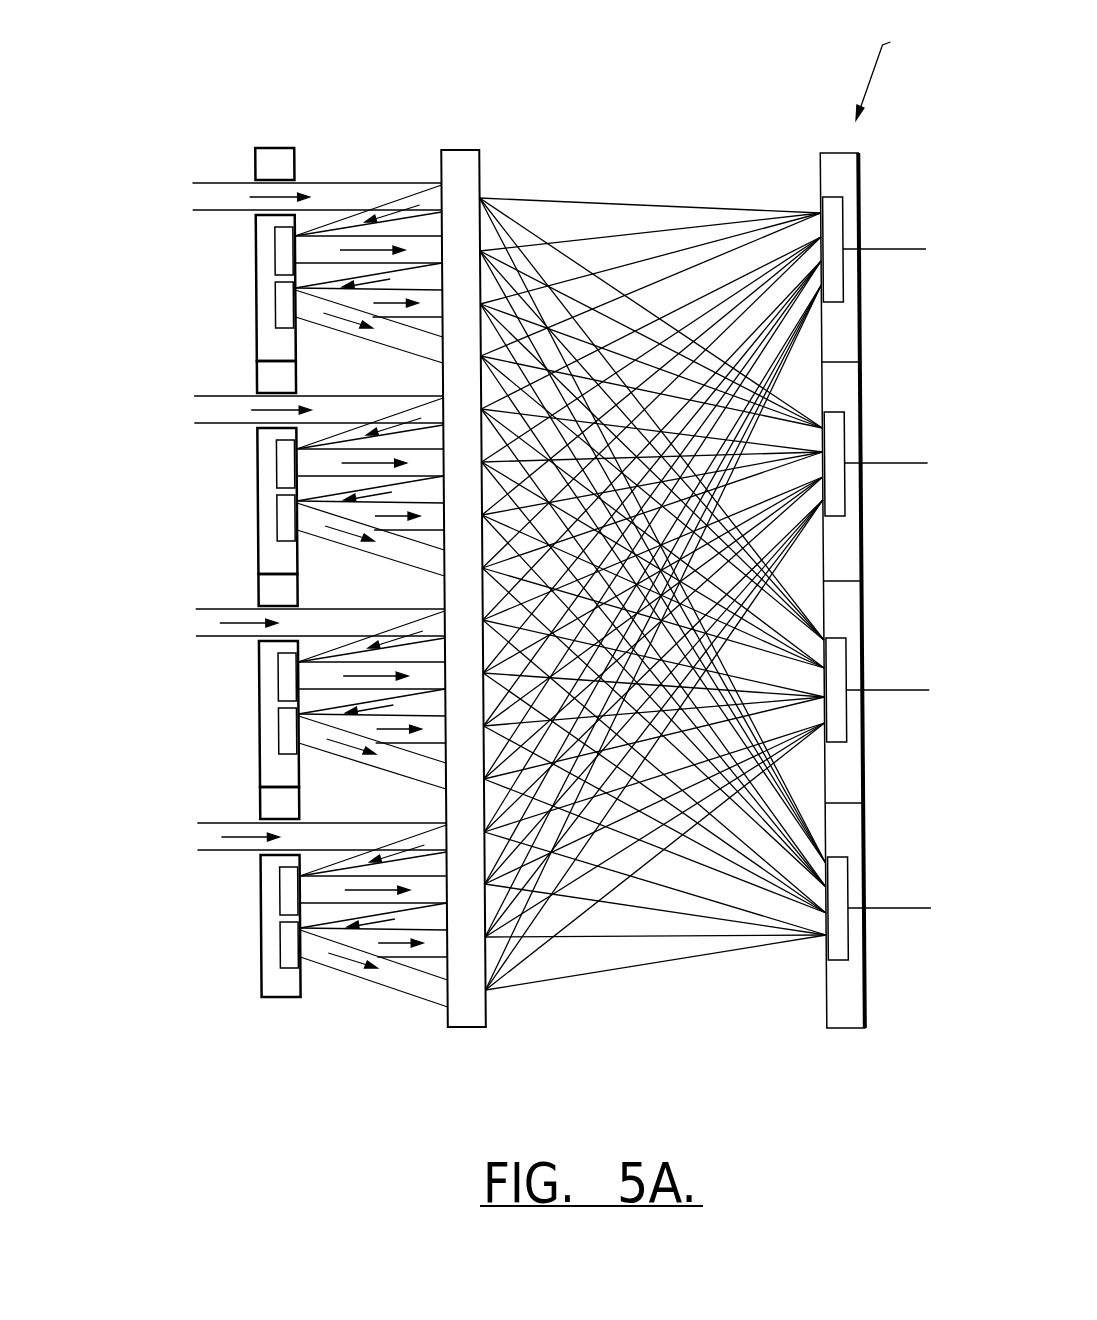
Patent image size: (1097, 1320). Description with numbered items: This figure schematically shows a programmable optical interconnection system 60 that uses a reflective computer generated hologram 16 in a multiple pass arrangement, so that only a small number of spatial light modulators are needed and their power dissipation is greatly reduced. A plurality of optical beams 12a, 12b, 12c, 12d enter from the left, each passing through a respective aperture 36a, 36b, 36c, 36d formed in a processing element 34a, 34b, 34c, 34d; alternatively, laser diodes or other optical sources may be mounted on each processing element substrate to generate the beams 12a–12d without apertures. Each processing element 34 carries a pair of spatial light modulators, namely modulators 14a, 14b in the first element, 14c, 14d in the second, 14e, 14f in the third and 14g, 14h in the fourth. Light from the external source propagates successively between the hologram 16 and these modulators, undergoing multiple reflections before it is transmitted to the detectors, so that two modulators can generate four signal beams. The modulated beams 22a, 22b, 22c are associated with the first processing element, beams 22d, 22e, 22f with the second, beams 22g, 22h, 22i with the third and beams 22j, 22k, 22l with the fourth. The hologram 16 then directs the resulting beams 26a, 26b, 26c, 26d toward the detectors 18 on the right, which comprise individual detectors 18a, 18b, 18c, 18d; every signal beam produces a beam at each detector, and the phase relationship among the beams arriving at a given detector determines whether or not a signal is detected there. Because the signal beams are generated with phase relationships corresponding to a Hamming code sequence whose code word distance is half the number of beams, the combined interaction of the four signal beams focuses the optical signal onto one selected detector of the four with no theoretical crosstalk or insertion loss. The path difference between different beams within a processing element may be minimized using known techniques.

The optical beam 12a is at (268, 184).
The optical beam 12b is at (270, 396).
The optical beam 12c is at (271, 609).
The optical beam 12d is at (273, 822).
The spatial light modulator 14a is at (210, 244).
The spatial light modulator 14b is at (211, 290).
The spatial light modulator 14c is at (212, 456).
The spatial light modulator 14d is at (214, 503).
The spatial light modulator 14e is at (214, 668).
The spatial light modulator 14f is at (216, 714).
The spatial light modulator 14g is at (216, 881).
The spatial light modulator 14h is at (217, 928).
The computer generated hologram 16 is at (489, 621).
The detectors 18 is at (810, 559).
The detector 18a is at (886, 225).
The detector 18b is at (888, 442).
The detector 18c is at (892, 667).
The detector 18d is at (894, 885).
The modulated beam 22a is at (368, 176).
The modulated beam 22b is at (368, 219).
The modulated beam 22c is at (369, 329).
The modulated beam 22d is at (370, 423).
The modulated beam 22e is at (371, 527).
The modulated beam 22f is at (371, 554).
The modulated beam 22g is at (371, 650).
The modulated beam 22h is at (372, 741).
The modulated beam 22i is at (372, 768).
The modulated beam 22j is at (360, 934).
The modulated beam 22k is at (359, 993).
The modulated beam 22l is at (364, 1029).
The diffracted beam 26a is at (629, 542).
The diffracted beam 26b is at (653, 536).
The diffracted beam 26c is at (653, 555).
The diffracted beam 26d is at (652, 571).
The processing element 34 is at (257, 136).
The processing element 34a is at (224, 304).
The processing element 34b is at (225, 517).
The processing element 34c is at (228, 730).
The processing element 34d is at (230, 926).
The aperture 36a is at (243, 169).
The aperture 36b is at (243, 384).
The aperture 36c is at (228, 595).
The aperture 36d is at (228, 809).
The programmable optical interconnection system 60 is at (888, 75).